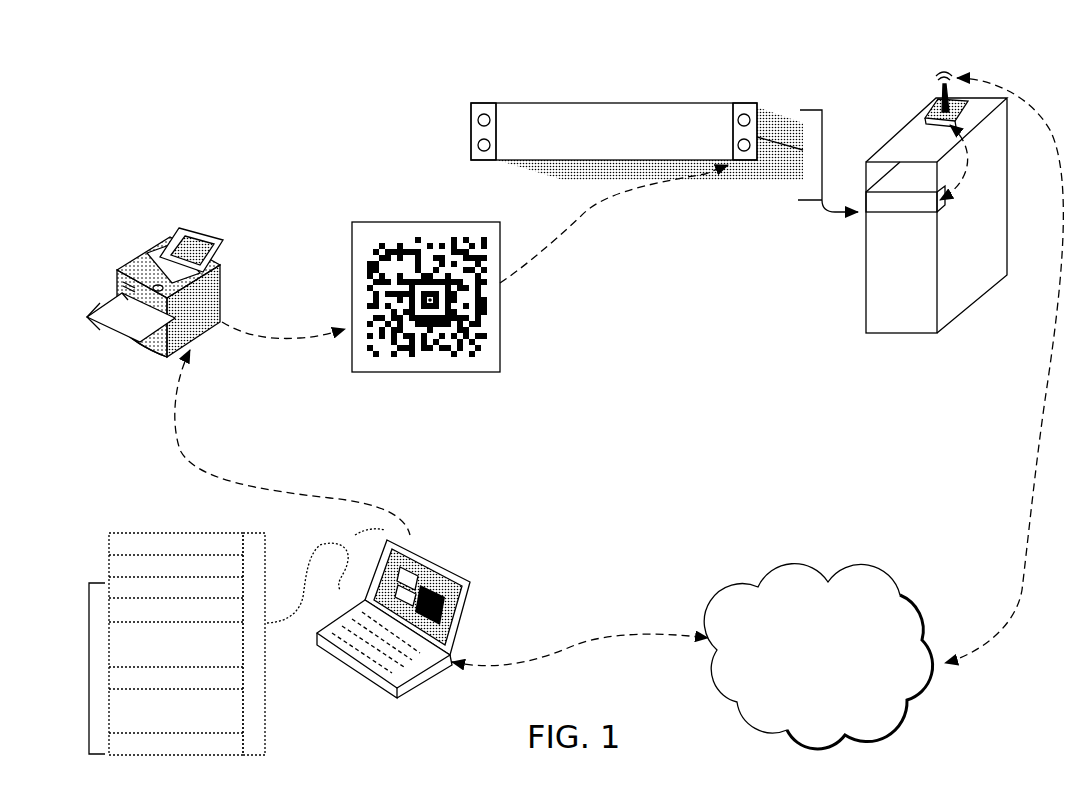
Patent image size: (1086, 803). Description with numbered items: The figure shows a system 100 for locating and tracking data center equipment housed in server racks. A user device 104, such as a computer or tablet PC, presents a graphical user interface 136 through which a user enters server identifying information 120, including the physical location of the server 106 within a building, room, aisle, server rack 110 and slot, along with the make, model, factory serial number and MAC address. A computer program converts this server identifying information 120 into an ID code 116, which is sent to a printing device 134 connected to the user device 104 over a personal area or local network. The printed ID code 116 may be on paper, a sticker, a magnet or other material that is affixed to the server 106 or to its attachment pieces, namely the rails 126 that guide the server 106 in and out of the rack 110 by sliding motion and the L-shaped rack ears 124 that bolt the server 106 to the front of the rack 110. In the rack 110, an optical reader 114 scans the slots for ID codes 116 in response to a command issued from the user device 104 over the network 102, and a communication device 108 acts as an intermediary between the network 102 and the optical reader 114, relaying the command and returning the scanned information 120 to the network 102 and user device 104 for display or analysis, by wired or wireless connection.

The system 100 is at (156, 96).
The network 102 is at (818, 656).
The user device 104 is at (356, 696).
The server 106 is at (708, 157).
The communication device 108 is at (938, 78).
The server rack 110 is at (936, 215).
The optical reader 114 is at (935, 208).
The ID code 116 is at (206, 216).
The server identifying information 120 is at (87, 667).
The rack ears 124 is at (480, 102).
The rails 126 is at (783, 150).
The printing device 134 is at (220, 298).
The graphical user interface 136 is at (120, 508).